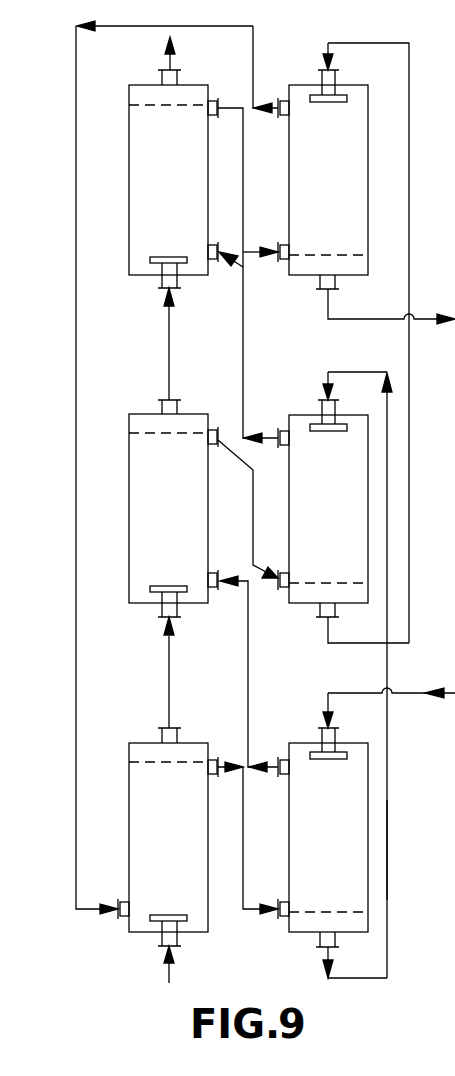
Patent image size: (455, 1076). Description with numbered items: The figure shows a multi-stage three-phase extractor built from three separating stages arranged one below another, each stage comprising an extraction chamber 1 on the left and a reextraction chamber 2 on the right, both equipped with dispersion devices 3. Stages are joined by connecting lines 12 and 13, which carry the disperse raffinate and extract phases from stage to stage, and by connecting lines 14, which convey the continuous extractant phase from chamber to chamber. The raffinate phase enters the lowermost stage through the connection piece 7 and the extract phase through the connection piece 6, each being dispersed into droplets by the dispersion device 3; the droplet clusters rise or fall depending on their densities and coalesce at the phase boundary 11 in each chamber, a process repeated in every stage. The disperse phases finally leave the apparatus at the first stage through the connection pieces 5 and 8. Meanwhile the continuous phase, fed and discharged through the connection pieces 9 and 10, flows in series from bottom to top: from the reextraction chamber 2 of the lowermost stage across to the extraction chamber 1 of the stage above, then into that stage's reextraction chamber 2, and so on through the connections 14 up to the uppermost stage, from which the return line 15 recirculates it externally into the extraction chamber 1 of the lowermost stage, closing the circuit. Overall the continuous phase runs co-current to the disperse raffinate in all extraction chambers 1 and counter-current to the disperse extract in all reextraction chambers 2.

The extraction chamber 1 is at (129, 173).
The reextraction chamber 2 is at (368, 180).
The dispersion device 3 is at (347, 98).
The connection piece 5 is at (162, 70).
The connection piece 6 is at (340, 70).
The connection piece 7 is at (162, 286).
The connection piece 8 is at (335, 285).
The connection piece 9 is at (218, 245).
The connection piece 10 is at (283, 97).
The phase boundary 11 is at (129, 105).
The connecting line 12 is at (170, 360).
The connecting line 13 is at (387, 878).
The connecting line 14 is at (243, 170).
The return line 15 is at (76, 530).